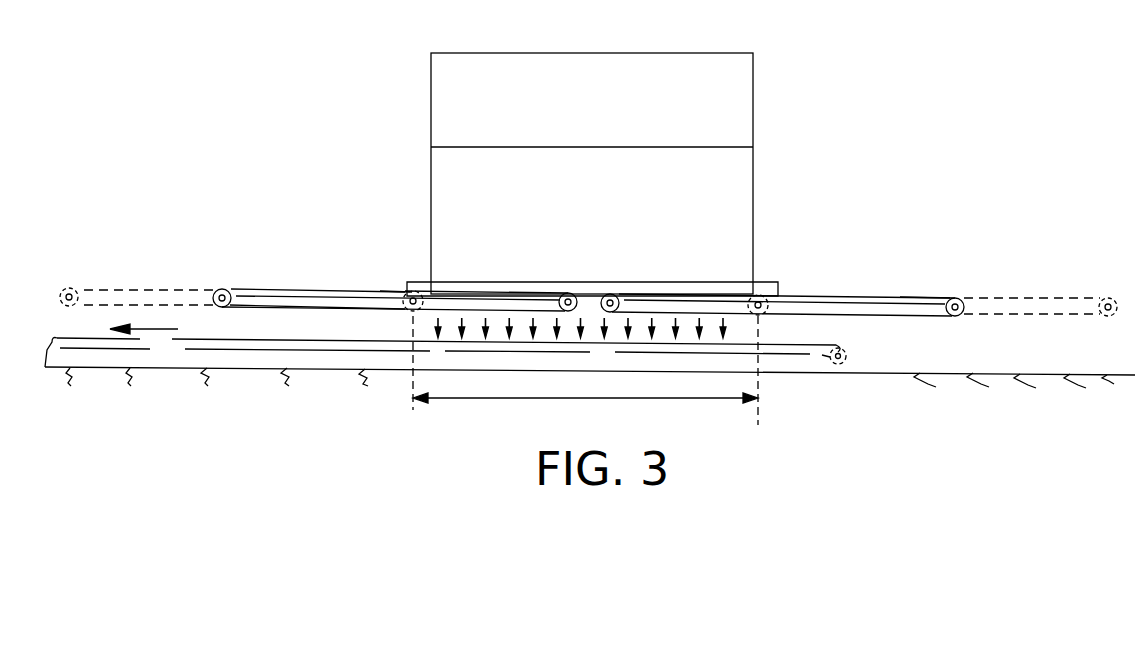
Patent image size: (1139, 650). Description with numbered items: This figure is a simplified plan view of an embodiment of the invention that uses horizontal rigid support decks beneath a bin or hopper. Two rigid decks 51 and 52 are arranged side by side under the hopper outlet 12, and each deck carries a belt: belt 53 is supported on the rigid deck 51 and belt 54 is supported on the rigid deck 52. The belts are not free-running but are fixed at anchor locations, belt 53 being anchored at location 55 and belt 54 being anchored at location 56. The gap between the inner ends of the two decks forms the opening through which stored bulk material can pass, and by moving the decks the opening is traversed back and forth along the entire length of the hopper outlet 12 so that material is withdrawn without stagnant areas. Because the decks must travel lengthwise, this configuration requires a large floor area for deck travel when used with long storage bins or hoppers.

The hopper outlet 12 is at (696, 283).
The rigid deck 51 is at (312, 291).
The rigid deck 52 is at (863, 296).
The belt 53 is at (387, 291).
The belt 54 is at (920, 296).
The anchor location 55 is at (404, 291).
The anchor location 56 is at (777, 296).